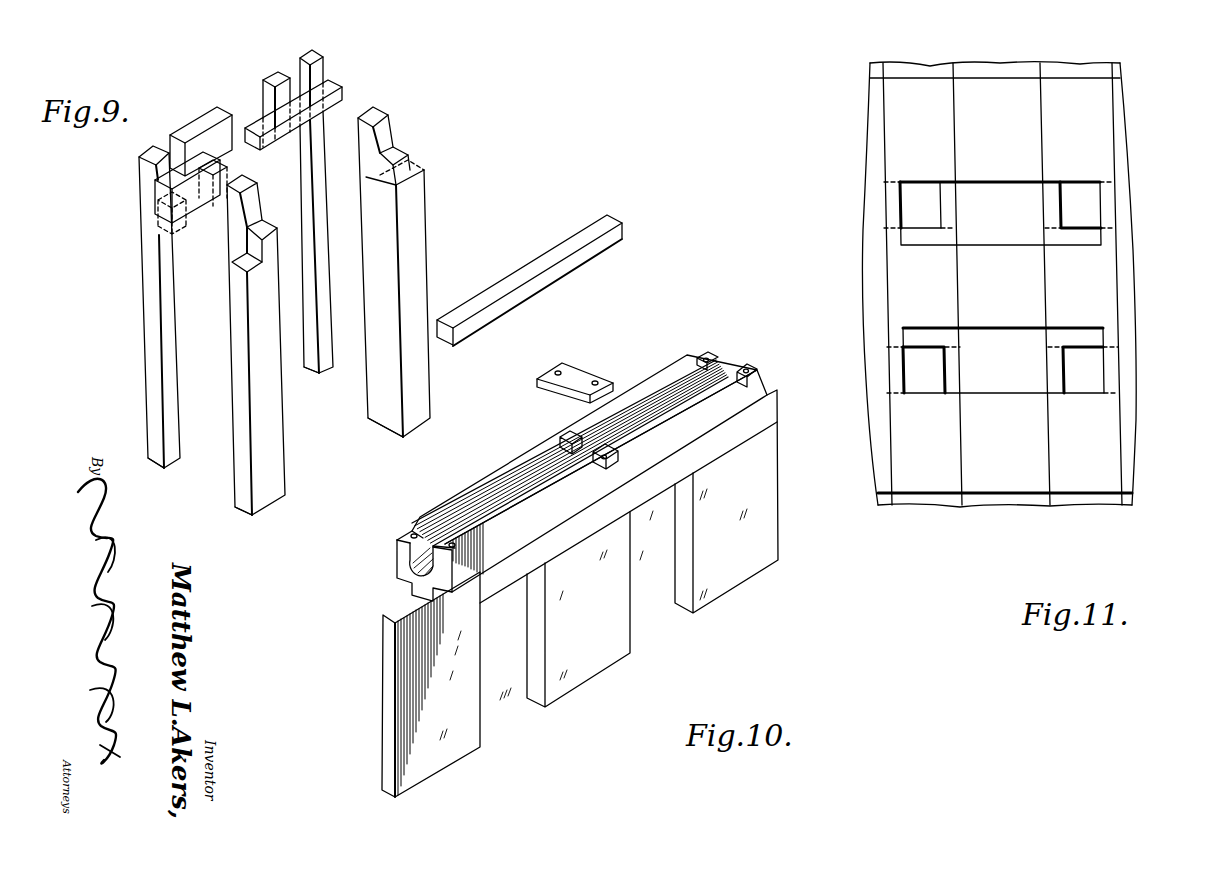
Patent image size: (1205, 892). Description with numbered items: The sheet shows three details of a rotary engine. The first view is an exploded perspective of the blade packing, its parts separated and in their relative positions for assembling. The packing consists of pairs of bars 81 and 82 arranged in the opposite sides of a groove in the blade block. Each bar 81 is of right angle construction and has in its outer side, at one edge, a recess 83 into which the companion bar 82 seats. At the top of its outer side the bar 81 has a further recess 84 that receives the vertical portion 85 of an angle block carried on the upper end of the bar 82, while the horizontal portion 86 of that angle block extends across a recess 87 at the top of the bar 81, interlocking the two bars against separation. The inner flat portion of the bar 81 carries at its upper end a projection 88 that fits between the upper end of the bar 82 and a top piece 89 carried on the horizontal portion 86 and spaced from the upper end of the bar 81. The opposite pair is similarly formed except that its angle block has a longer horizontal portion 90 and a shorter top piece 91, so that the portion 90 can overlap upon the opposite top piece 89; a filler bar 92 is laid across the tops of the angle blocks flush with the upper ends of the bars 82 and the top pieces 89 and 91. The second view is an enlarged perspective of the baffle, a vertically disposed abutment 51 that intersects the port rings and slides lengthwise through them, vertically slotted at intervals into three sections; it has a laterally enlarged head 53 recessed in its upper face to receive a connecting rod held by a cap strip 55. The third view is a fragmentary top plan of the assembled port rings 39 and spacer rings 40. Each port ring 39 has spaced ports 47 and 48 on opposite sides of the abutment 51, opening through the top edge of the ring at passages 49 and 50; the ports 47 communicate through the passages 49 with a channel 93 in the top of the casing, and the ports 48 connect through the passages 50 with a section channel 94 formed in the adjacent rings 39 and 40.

In FIG. 11, the port ring 39 is at (1105, 451).
In FIG. 11, the spacer ring 40 is at (1022, 480).
In FIG. 11, the port 47 is at (893, 229).
In FIG. 11, the port 48 is at (893, 361).
In FIG. 11, the passage 49 is at (905, 192).
In FIG. 11, the passage 50 is at (912, 378).
In FIG. 10, the abutment 51 is at (744, 572).
In FIG. 10, the head 53 is at (708, 400).
In FIG. 10, the cap strip 55 is at (578, 375).
In FIG. 9, the bar 81 is at (272, 419).
In FIG. 9, the bar 82 is at (150, 291).
In FIG. 9, the recess 83 is at (245, 268).
In FIG. 9, the recess 84 is at (253, 253).
In FIG. 9, the vertical portion of angle block 85 is at (180, 214).
In FIG. 9, the horizontal portion of angle block 86 is at (215, 184).
In FIG. 9, the recess 87 is at (266, 236).
In FIG. 9, the projection 88 is at (254, 191).
In FIG. 9, the top piece 89 is at (192, 127).
In FIG. 9, the horizontal portion of angle block 90 is at (272, 131).
In FIG. 9, the top piece 91 is at (270, 78).
In FIG. 9, the filler bar 92 is at (528, 276).
In FIG. 11, the channel 93 is at (1020, 384).
In FIG. 11, the section channel 94 is at (1001, 186).